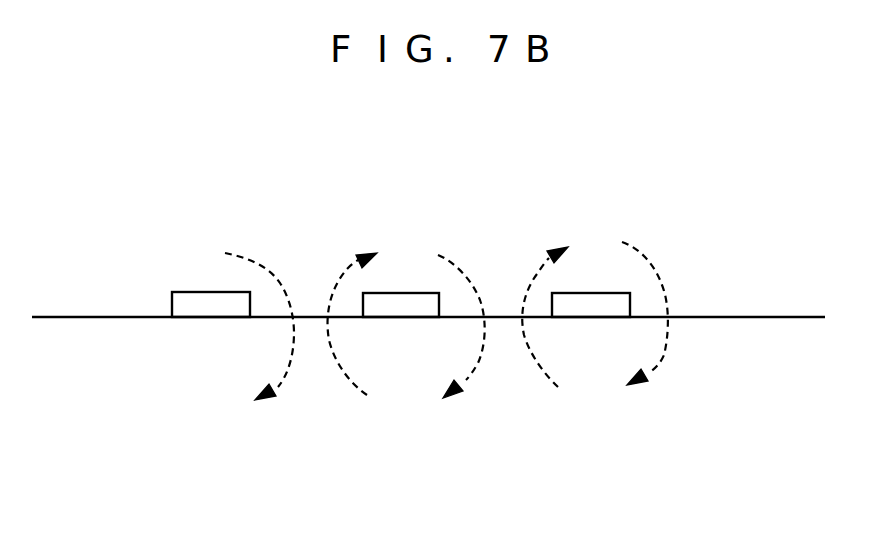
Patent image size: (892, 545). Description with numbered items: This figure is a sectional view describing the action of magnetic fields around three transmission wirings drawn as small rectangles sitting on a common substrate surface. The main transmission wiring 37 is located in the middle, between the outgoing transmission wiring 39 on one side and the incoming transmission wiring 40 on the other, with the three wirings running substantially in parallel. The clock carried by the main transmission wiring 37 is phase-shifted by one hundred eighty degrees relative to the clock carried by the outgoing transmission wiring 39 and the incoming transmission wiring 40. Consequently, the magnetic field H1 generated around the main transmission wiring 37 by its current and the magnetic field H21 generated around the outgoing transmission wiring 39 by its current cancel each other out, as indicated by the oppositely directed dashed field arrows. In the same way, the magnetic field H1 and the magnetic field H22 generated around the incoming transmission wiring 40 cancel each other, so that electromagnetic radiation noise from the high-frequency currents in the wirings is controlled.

The outgoing transmission wiring 39 is at (198, 305).
The main transmission wiring 37 is at (399, 305).
The incoming transmission wiring 40 is at (590, 305).
The magnetic field H21 is at (257, 258).
The magnetic field H1 is at (348, 383).
The magnetic field H22 is at (647, 258).